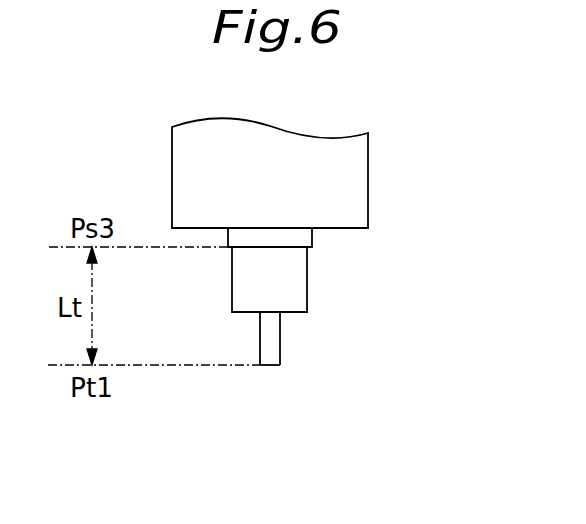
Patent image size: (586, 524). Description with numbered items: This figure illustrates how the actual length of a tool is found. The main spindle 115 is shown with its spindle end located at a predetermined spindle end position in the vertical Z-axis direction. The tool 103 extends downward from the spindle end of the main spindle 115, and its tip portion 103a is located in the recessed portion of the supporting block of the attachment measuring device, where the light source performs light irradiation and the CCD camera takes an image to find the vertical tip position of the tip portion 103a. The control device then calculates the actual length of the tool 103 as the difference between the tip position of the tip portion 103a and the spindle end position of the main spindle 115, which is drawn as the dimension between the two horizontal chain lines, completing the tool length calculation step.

The main spindle 115 is at (312, 235).
The tool 103 is at (282, 337).
The tip portion 103a is at (270, 365).